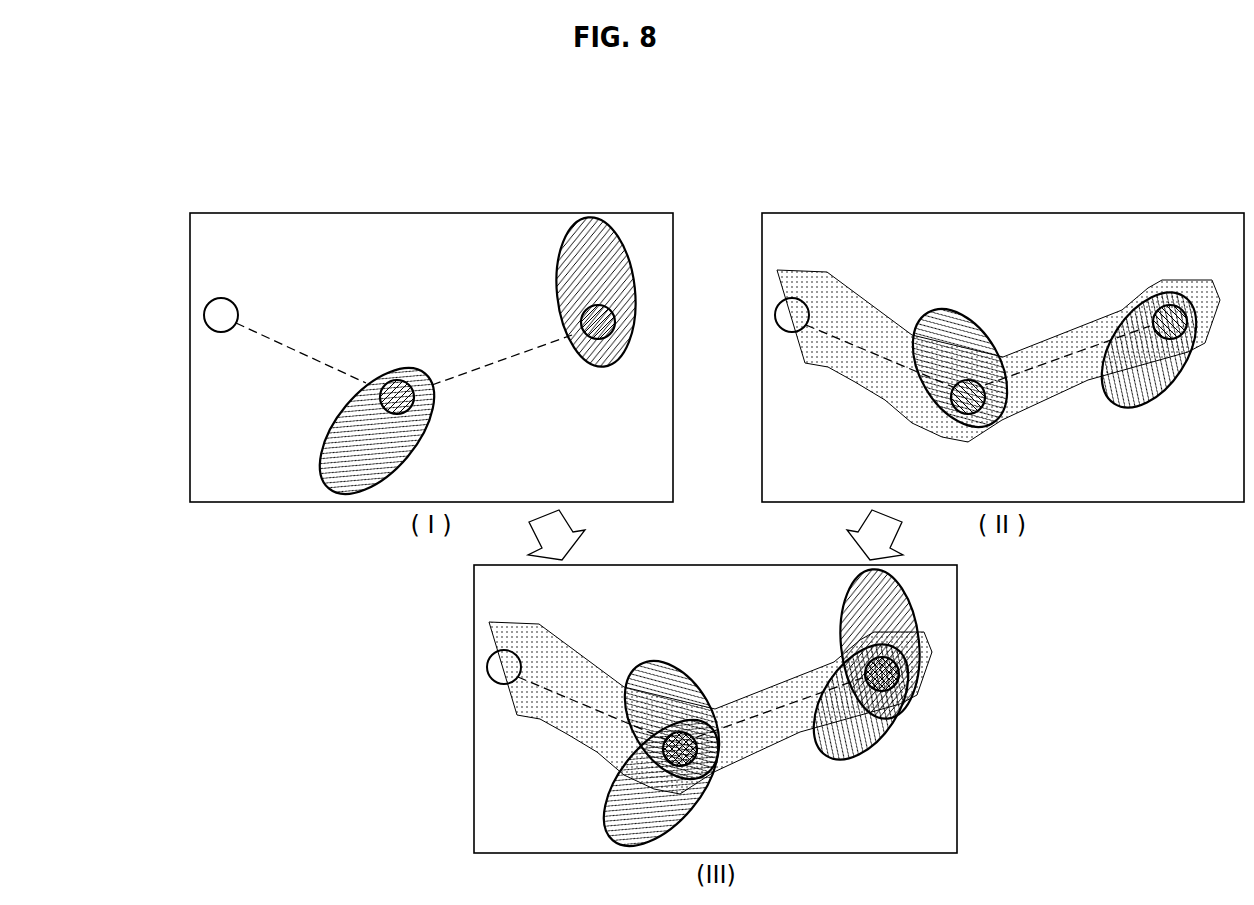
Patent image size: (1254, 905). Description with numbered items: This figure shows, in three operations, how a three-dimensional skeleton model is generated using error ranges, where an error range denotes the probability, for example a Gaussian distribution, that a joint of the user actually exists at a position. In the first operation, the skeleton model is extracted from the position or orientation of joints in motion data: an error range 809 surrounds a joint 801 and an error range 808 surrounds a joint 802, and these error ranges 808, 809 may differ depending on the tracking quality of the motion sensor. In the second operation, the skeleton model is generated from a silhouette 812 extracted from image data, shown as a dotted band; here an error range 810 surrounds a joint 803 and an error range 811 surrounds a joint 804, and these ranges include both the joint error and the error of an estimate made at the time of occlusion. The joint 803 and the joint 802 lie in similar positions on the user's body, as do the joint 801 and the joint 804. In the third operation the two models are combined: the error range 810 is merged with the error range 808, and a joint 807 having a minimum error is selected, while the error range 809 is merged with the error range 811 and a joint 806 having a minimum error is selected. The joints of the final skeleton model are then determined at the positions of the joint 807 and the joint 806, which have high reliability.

The joint 801 is at (581, 317).
The joint 802 is at (398, 380).
The joint 803 is at (977, 363).
The joint 804 is at (1165, 297).
The joint 806 is at (848, 652).
The joint 807 is at (713, 777).
The error range 808 is at (337, 418).
The error range 809 is at (604, 367).
The error range 810 is at (933, 309).
The error range 811 is at (1157, 399).
The silhouette 812 is at (1045, 404).